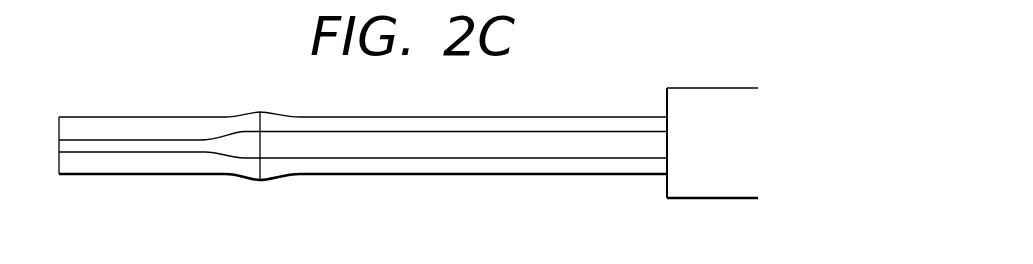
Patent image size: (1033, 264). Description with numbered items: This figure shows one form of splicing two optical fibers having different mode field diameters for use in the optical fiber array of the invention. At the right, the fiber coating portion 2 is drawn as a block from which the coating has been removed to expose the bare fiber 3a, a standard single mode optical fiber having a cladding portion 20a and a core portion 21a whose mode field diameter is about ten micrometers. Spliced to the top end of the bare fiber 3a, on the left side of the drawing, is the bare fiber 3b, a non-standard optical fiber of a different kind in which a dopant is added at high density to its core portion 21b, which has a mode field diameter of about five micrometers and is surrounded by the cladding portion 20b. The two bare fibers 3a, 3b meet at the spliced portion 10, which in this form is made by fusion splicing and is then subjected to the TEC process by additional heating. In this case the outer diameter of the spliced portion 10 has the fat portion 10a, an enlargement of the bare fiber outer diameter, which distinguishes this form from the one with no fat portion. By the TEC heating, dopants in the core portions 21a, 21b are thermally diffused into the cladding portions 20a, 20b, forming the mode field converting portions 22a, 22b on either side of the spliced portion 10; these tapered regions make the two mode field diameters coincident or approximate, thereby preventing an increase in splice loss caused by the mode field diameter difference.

The fiber coating portion 2 is at (698, 95).
The bare fiber 3a is at (363, 116).
The bare fiber 3b is at (147, 117).
The spliced portion 10 is at (264, 113).
The fat portion 10a is at (243, 113).
The cladding portion 20a is at (370, 163).
The cladding portion 20b is at (100, 163).
The core portion 21a is at (443, 147).
The core portion 21b is at (163, 147).
The mode field converting portion 22a is at (278, 147).
The mode field converting portion 22b is at (235, 147).